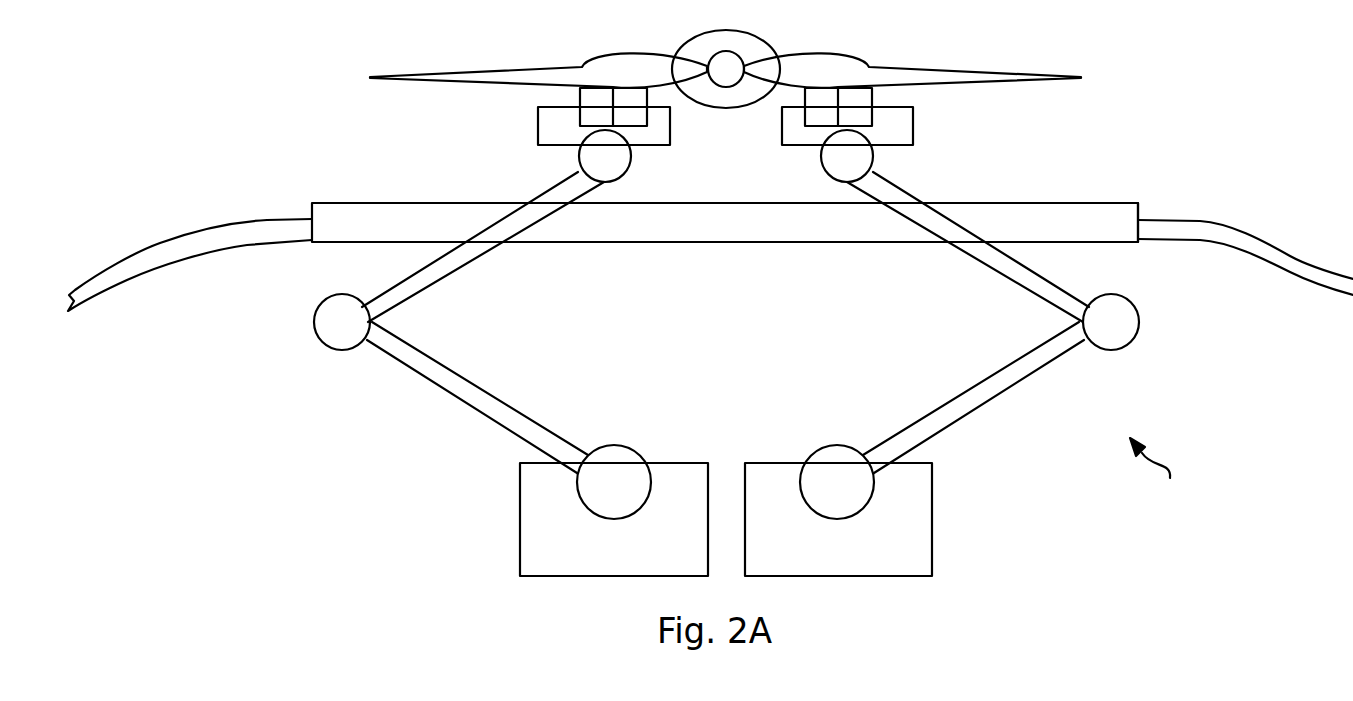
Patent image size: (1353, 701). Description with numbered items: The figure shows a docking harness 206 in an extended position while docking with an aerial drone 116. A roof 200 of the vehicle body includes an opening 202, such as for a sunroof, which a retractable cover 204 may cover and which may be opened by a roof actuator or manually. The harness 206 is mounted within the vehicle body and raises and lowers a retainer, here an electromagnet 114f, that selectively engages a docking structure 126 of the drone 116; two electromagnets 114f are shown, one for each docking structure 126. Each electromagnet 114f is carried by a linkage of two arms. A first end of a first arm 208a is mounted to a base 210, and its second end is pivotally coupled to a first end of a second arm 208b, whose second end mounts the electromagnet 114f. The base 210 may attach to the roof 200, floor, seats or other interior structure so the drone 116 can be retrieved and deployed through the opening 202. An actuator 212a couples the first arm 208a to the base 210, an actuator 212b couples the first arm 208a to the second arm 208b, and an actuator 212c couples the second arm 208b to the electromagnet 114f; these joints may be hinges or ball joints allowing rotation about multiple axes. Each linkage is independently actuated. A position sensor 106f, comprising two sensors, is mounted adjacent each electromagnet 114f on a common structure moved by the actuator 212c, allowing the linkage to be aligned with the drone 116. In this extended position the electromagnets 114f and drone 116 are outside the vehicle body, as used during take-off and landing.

The drone 116 is at (470, 78).
The docking structure 126 is at (630, 98).
The electromagnet 114f is at (640, 118).
The position sensor 106f is at (595, 118).
The actuator 212c is at (613, 155).
The retractable cover 204 is at (727, 232).
The opening 202 is at (1138, 230).
The roof 200 is at (1290, 256).
The second arm 208b is at (425, 287).
The actuator 212b is at (335, 343).
The first arm 208a is at (502, 420).
The actuator 212a is at (626, 463).
The base 210 is at (540, 530).
The harness 206 is at (1160, 472).